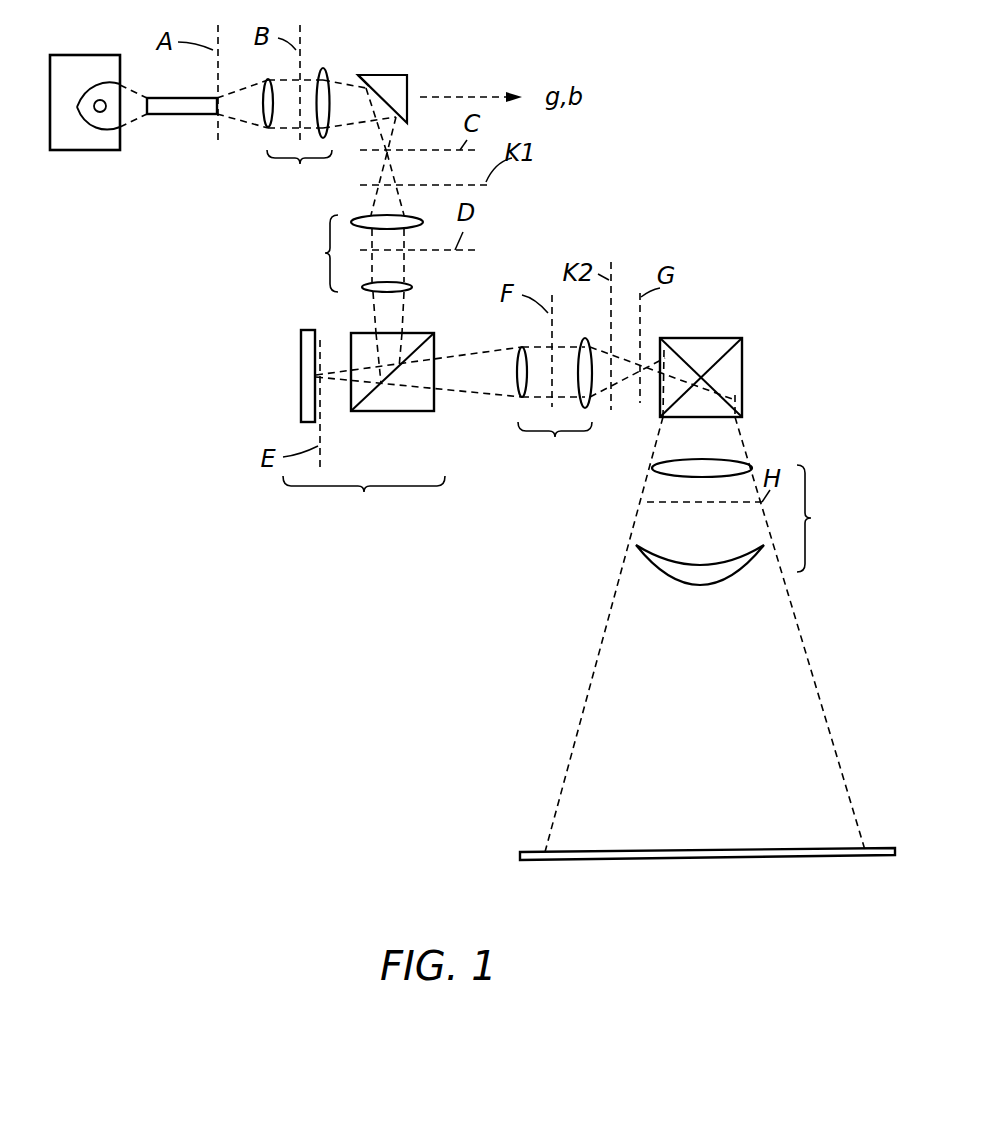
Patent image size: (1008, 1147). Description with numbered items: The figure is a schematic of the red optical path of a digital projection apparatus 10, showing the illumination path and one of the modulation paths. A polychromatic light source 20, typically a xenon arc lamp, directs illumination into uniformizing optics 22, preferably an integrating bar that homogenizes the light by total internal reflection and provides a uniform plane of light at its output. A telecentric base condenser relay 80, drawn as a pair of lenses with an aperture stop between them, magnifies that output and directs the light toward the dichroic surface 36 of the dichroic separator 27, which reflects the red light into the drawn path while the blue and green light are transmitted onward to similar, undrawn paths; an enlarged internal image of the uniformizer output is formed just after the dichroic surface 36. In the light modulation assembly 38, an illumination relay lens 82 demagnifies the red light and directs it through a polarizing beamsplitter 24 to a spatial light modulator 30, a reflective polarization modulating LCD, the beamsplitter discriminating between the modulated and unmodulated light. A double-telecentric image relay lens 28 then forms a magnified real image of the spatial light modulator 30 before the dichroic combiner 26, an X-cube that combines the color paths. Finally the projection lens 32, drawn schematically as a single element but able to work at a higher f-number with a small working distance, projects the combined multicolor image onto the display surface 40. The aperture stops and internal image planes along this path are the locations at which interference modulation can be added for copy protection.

The projection apparatus 10 is at (305, 603).
The polychromatic light source 20 is at (88, 152).
The uniformizing optics 22 is at (187, 116).
The polarizing beamsplitter 24 is at (403, 413).
The dichroic combiner 26 is at (700, 338).
The dichroic separator 27 is at (393, 75).
The image relay lens 28 is at (554, 404).
The spatial light modulator 30 is at (300, 398).
The projection lens 32 is at (742, 522).
The dichroic surface 36 is at (373, 75).
The light modulation assembly 38 is at (364, 499).
The display surface 40 is at (538, 851).
The telecentric base condenser relay 80 is at (297, 135).
The illumination relay lens 82 is at (353, 253).